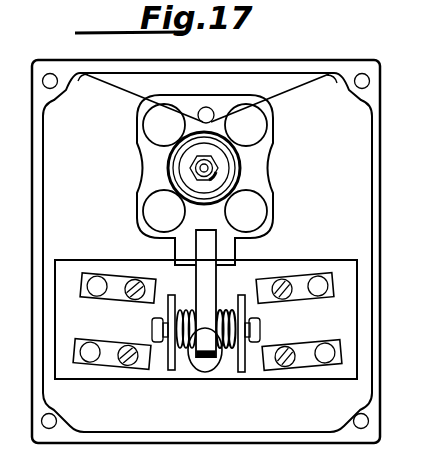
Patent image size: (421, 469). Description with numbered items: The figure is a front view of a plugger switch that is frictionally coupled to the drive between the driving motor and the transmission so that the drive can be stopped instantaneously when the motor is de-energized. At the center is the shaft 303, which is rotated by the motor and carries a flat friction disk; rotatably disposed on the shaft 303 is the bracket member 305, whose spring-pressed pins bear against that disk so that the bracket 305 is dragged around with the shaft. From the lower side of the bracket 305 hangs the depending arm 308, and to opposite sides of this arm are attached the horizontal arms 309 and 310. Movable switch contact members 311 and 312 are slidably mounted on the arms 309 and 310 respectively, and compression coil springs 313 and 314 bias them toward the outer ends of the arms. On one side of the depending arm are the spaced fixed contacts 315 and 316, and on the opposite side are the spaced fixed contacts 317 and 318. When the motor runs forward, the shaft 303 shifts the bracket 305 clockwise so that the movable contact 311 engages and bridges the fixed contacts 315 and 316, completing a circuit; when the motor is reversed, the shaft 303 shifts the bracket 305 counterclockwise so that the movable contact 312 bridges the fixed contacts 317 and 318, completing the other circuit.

The shaft 303 is at (218, 163).
The bracket member 305 is at (252, 177).
The depending arm 308 is at (212, 307).
The horizontal arm 309 is at (209, 361).
The horizontal arm 310 is at (221, 357).
The movable switch contact member 311 is at (172, 296).
The movable switch contact member 312 is at (242, 308).
The compression coil spring 313 is at (182, 366).
The compression coil spring 314 is at (236, 368).
The fixed contact 315 is at (157, 285).
The fixed contact 316 is at (148, 346).
The fixed contact 317 is at (265, 281).
The fixed contact 318 is at (265, 348).